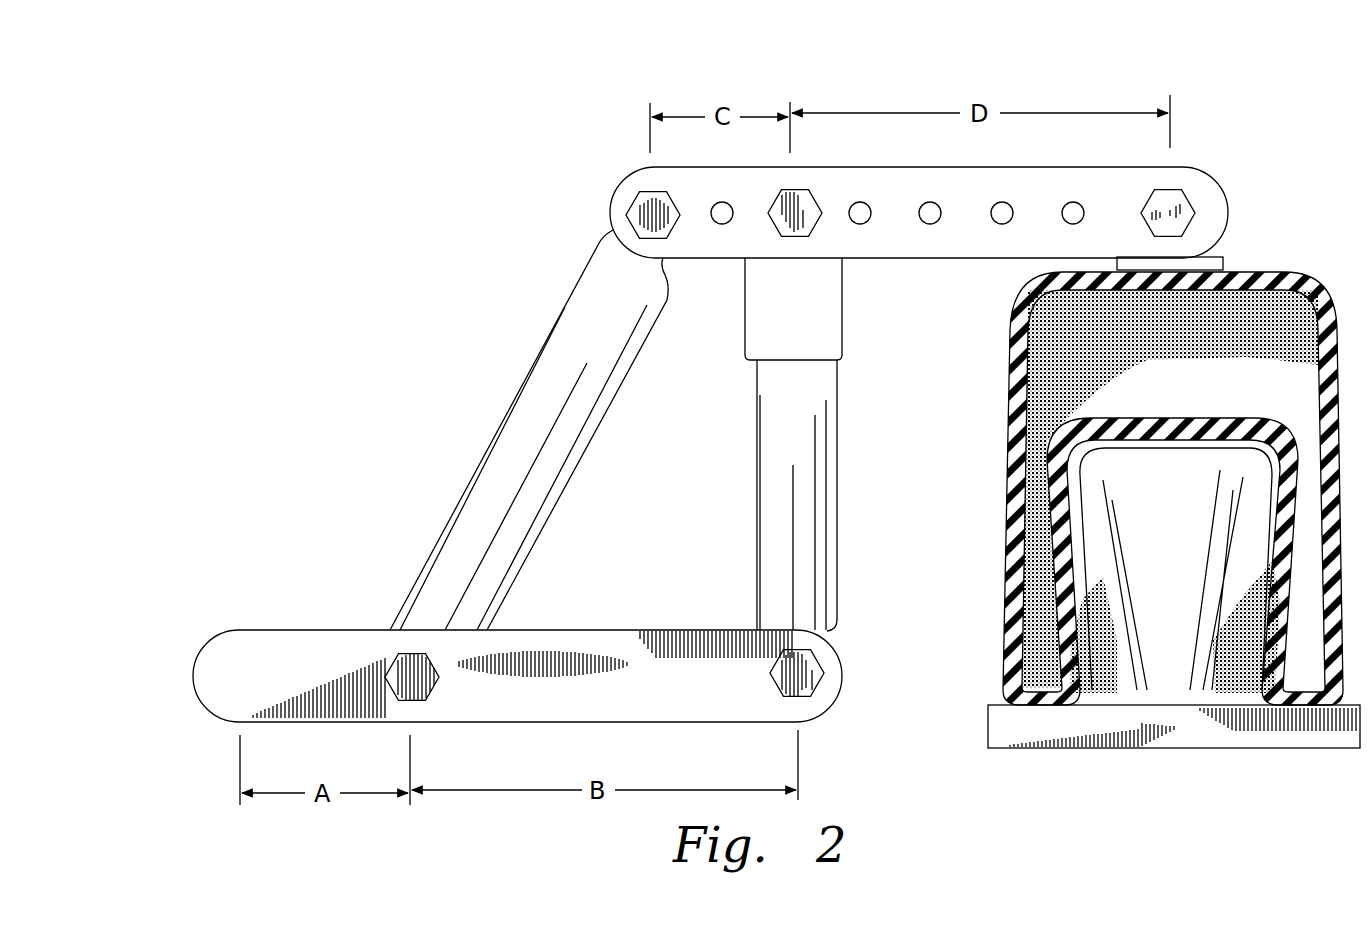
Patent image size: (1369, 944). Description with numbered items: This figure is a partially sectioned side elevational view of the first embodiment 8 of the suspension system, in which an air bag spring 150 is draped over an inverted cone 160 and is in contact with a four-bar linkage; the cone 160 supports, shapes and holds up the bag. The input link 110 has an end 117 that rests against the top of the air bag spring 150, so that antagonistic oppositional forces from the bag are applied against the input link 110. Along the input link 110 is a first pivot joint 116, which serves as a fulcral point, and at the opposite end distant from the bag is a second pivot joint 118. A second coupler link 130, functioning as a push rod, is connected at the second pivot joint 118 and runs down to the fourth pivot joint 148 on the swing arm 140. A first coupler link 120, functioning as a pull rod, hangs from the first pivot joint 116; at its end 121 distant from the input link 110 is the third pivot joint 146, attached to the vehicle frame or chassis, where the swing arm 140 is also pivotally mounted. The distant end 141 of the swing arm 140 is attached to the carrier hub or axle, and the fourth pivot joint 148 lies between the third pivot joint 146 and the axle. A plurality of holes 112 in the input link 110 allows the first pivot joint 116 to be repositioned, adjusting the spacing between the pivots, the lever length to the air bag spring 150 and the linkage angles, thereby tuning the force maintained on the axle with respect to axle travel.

The first embodiment 8 is at (536, 104).
The input link 110 is at (892, 247).
The holes 112 is at (941, 207).
The first pivot joint 116 is at (812, 196).
The end 117 is at (1207, 188).
The second pivot joint 118 is at (630, 210).
The first coupler link 120 is at (775, 435).
The end 121 is at (747, 617).
The second coupler link 130 is at (440, 518).
The swing arm 140 is at (604, 712).
The distant end 141 is at (203, 652).
The third pivot joint 146 is at (842, 656).
The fourth pivot joint 148 is at (387, 660).
The air bag spring 150 is at (1234, 395).
The inverted cone 160 is at (1190, 507).